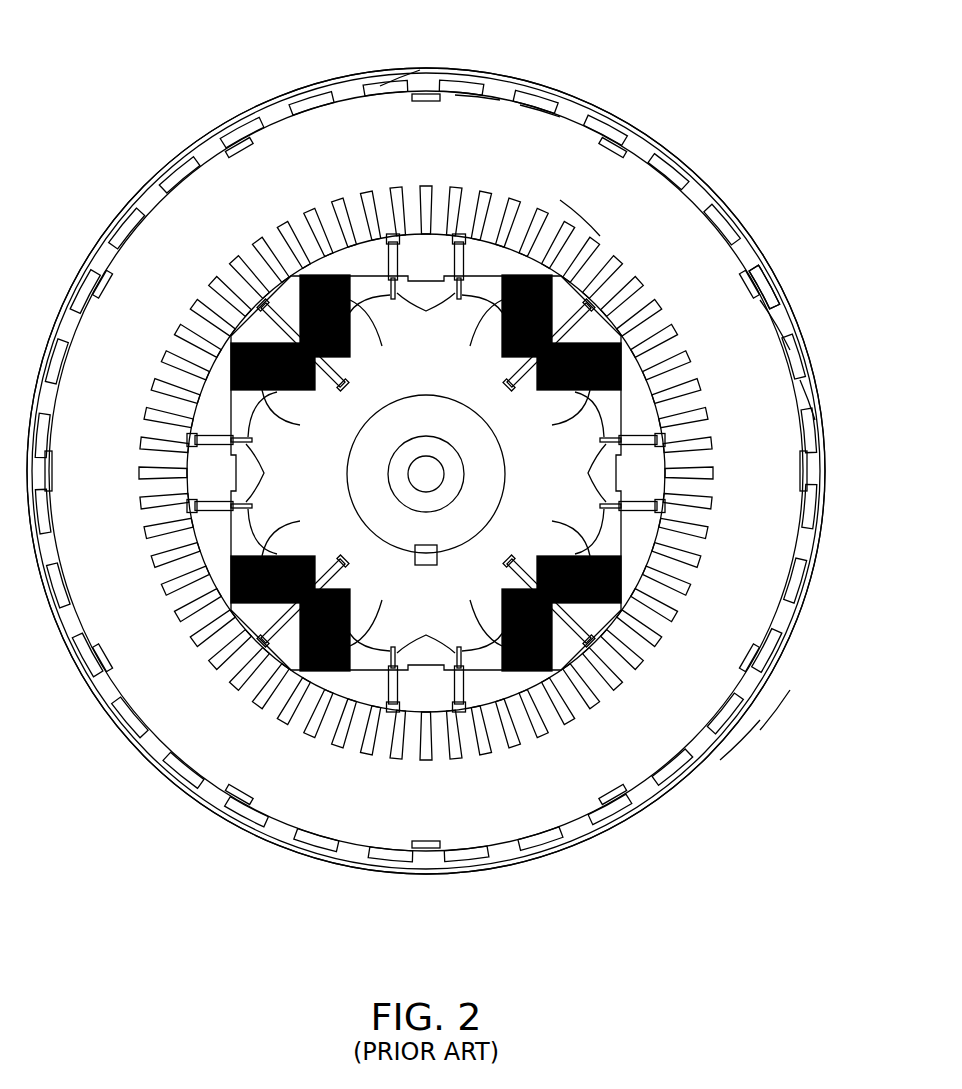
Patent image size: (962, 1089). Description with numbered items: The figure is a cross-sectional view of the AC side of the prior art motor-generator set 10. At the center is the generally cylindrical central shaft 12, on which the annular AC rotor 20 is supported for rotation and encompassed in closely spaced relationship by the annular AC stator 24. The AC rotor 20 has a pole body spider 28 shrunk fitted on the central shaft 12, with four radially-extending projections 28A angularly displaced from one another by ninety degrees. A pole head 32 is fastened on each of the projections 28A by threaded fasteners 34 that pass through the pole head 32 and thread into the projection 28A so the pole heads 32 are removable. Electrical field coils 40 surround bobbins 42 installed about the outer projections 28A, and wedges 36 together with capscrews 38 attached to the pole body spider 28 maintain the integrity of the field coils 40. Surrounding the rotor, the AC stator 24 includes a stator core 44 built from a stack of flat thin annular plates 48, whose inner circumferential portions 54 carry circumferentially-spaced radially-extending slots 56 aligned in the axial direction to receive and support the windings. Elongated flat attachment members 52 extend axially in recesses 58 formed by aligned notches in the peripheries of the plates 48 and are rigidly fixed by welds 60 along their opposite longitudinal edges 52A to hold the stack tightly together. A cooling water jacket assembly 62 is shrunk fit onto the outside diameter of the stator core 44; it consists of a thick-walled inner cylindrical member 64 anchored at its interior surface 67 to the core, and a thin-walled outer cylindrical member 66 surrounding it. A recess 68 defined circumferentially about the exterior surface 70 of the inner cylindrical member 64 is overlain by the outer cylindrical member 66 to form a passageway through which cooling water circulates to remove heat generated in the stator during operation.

The motor-generator set 10 is at (636, 86).
The central shaft 12 is at (372, 432).
The AC rotor 20 is at (576, 246).
The AC stator 24 is at (786, 326).
The pole body spider 28 is at (666, 540).
The projections 28A is at (548, 215).
The pole head 32 is at (418, 250).
The threaded fasteners 34 is at (428, 310).
The wedges 36 is at (268, 388).
The capscrews 38 is at (346, 368).
The electrical field coils 40 is at (355, 300).
The bobbins 42 is at (384, 348).
The stator core 44 is at (373, 92).
The thin annular plates 48 is at (479, 112).
The attachment members 52 is at (228, 132).
The longitudinal edges 52A is at (746, 262).
The inner circumferential portions 54 is at (548, 212).
The slots 56 is at (576, 240).
The recesses 58 is at (244, 146).
The welds 60 is at (252, 134).
The cooling water jacket assembly 62 is at (816, 630).
The inner cylindrical member 64 is at (796, 668).
The outer cylindrical member 66 is at (727, 748).
The interior surface 67 is at (768, 704).
The recess 68 is at (48, 330).
The exterior surface 70 is at (818, 384).